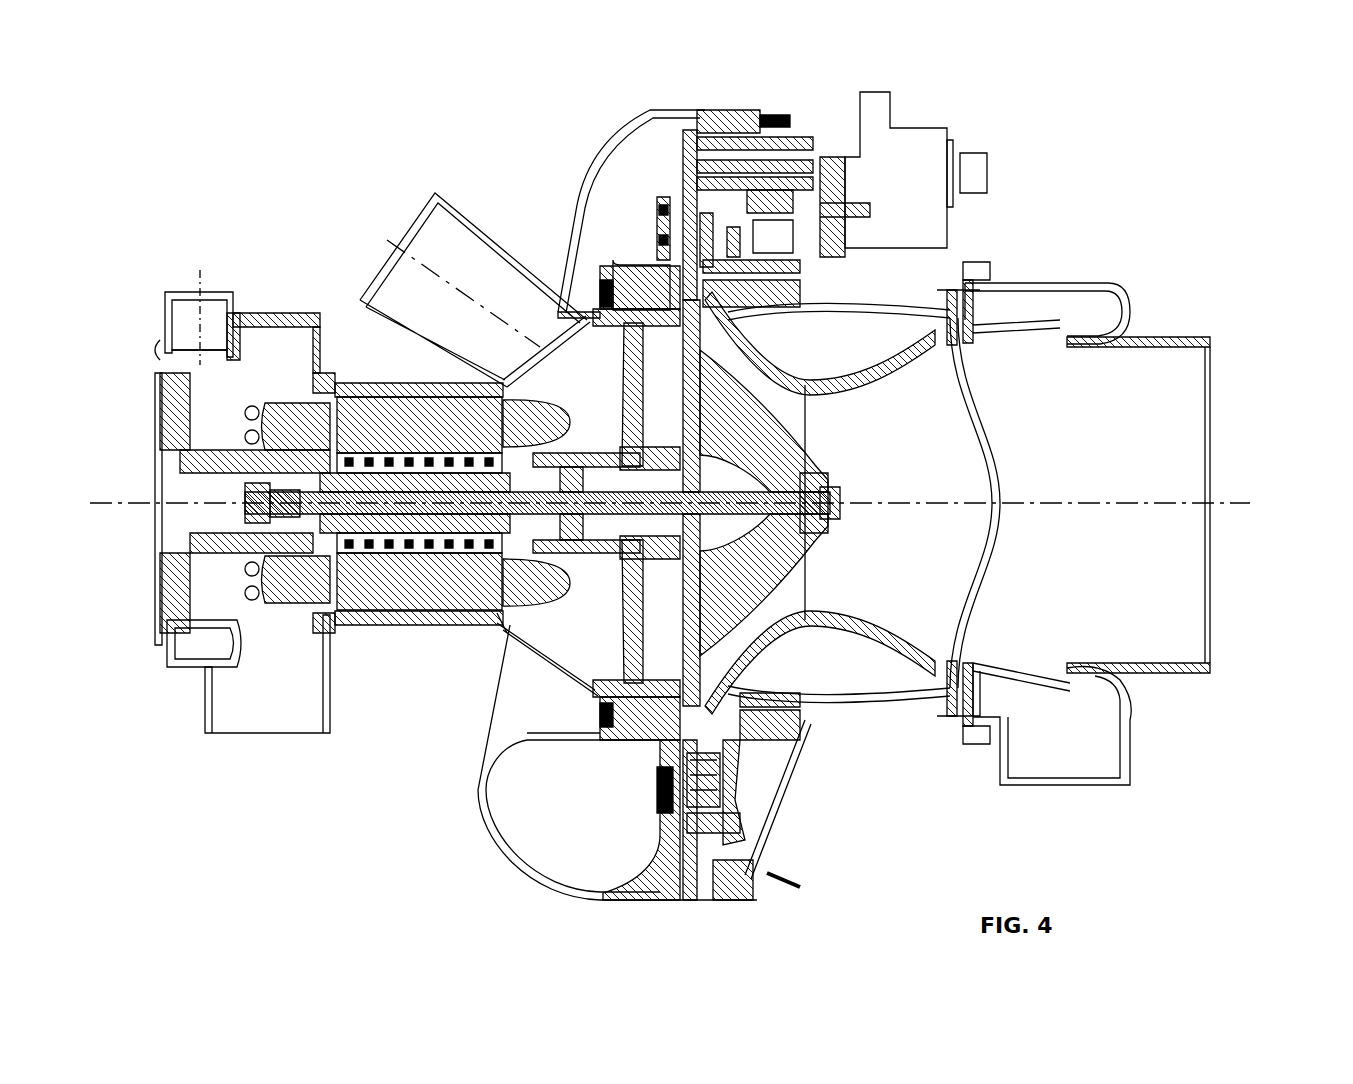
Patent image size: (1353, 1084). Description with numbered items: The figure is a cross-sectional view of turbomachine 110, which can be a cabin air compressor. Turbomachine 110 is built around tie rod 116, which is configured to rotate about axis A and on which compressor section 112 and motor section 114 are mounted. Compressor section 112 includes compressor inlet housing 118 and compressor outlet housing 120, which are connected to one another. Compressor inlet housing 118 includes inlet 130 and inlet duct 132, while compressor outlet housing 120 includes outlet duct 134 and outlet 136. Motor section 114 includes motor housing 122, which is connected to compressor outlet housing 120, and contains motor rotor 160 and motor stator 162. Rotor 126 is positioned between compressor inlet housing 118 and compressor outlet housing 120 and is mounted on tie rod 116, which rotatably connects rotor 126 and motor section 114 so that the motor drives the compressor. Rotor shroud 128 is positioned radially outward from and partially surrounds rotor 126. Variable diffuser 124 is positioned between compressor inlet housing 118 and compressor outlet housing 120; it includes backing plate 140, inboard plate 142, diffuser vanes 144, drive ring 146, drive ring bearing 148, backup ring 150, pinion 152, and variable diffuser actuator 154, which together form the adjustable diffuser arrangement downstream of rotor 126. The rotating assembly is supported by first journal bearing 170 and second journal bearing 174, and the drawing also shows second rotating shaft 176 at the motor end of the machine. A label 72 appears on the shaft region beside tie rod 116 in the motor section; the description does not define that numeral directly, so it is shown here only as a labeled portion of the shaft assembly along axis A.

The axis A is at (1242, 502).
The shaft 72 is at (570, 555).
The turbomachine 110 is at (162, 130).
The compressor section 112 is at (1092, 135).
The motor section 114 is at (270, 240).
The tie rod 116 is at (483, 517).
The compressor inlet housing 118 is at (1123, 327).
The compressor outlet housing 120 is at (612, 130).
The motor housing 122 is at (345, 380).
The variable diffuser 124 is at (753, 853).
The rotor 126 is at (720, 567).
The rotor shroud 128 is at (837, 385).
The inlet 130 is at (1212, 408).
The inlet duct 132 is at (1125, 438).
The outlet duct 134 is at (665, 186).
The outlet 136 is at (540, 826).
The backing plate 140 is at (667, 740).
The inboard plate 142 is at (692, 812).
The diffuser vanes 144 is at (691, 860).
The drive ring 146 is at (738, 802).
The drive ring bearing 148 is at (785, 750).
The backup ring 150 is at (807, 725).
The pinion 152 is at (778, 205).
The variable diffuser actuator 154 is at (918, 145).
The motor rotor 160 is at (363, 540).
The motor stator 162 is at (412, 573).
The first journal bearing 170 is at (585, 460).
The second journal bearing 174 is at (225, 450).
The second rotating shaft 176 is at (213, 473).